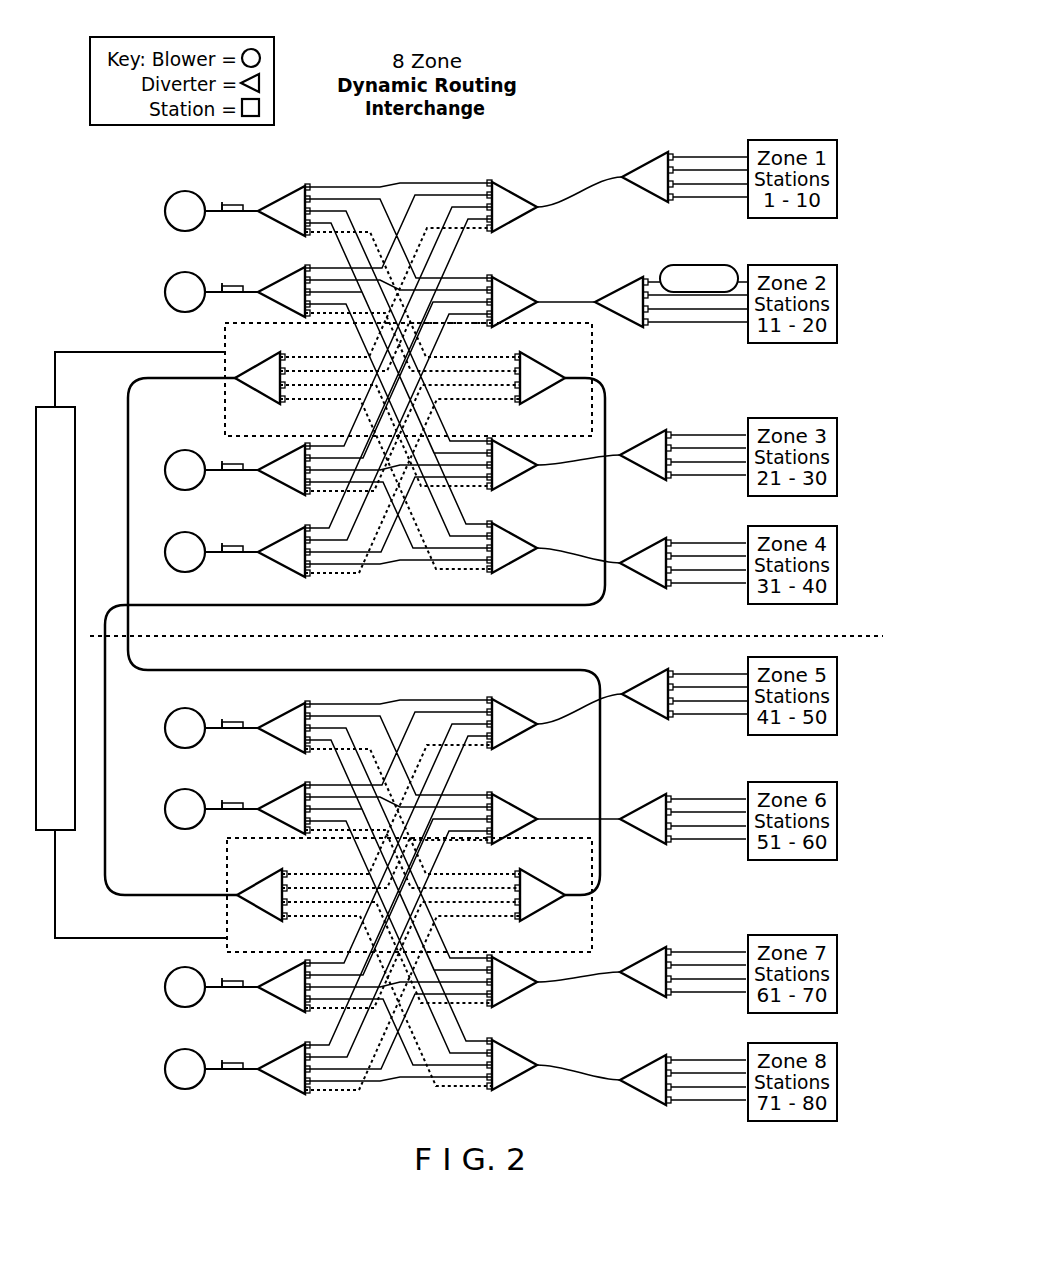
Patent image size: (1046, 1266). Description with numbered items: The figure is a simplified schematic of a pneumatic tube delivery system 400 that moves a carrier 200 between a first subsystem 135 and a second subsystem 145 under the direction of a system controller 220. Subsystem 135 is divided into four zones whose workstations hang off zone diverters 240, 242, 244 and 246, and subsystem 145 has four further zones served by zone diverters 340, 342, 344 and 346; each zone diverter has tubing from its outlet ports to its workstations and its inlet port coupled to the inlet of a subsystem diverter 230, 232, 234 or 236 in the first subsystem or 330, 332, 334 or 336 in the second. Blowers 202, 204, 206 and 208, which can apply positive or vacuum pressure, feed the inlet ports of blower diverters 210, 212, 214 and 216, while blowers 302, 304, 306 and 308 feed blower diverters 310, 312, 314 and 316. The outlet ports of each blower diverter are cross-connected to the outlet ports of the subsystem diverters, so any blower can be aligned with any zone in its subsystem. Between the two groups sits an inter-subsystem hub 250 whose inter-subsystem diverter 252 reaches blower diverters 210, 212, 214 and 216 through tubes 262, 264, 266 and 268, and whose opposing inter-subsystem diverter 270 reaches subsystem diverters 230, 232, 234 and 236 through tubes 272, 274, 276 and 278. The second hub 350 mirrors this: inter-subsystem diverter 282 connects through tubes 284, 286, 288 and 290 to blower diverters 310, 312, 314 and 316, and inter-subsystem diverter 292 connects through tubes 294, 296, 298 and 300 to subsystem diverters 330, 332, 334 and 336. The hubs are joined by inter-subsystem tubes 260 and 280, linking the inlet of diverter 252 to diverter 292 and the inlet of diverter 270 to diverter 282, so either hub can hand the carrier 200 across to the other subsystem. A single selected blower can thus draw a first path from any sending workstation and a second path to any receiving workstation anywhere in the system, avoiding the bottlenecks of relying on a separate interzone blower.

The pneumatic tube delivery system 400 is at (580, 66).
The subsystem 135 is at (853, 378).
The subsystem 145 is at (853, 895).
The carrier 200 is at (695, 264).
The blower 202 is at (170, 197).
The blower 204 is at (170, 280).
The blower 206 is at (187, 450).
The blower 208 is at (203, 563).
The blower diverter 210 is at (264, 202).
The blower diverter 212 is at (282, 279).
The blower diverter 214 is at (266, 466).
The blower diverter 216 is at (270, 546).
The system controller 220 is at (76, 428).
The subsystem diverter 230 is at (512, 194).
The subsystem diverter 232 is at (510, 287).
The subsystem diverter 234 is at (515, 453).
The subsystem diverter 236 is at (512, 534).
The zone diverter 240 is at (640, 167).
The zone diverter 242 is at (612, 293).
The zone diverter 244 is at (650, 439).
The zone diverter 246 is at (652, 546).
The inter-subsystem hub 250 is at (592, 364).
The inter-subsystem diverter 252 is at (548, 367).
The inter-subsystem tube 260 is at (520, 603).
The tube 262 is at (470, 356).
The tube 264 is at (505, 370).
The tube 266 is at (528, 400).
The tube 268 is at (485, 386).
The inter-subsystem diverter 270 is at (262, 363).
The tube 272 is at (357, 356).
The tube 274 is at (325, 370).
The tube 276 is at (318, 386).
The tube 278 is at (335, 400).
The inter-subsystem tube 280 is at (565, 670).
The inter-subsystem diverter 282 is at (548, 884).
The tube 284 is at (470, 873).
The tube 286 is at (505, 887).
The tube 288 is at (528, 917).
The tube 290 is at (485, 903).
The inter-subsystem diverter 292 is at (262, 880).
The tube 294 is at (357, 873).
The tube 296 is at (325, 887).
The tube 298 is at (318, 903).
The tube 300 is at (335, 917).
The blower 302 is at (170, 714).
The blower 304 is at (170, 797).
The blower 306 is at (170, 985).
The blower 308 is at (170, 1068).
The blower diverter 310 is at (264, 719).
The blower diverter 312 is at (282, 796).
The blower diverter 314 is at (266, 983).
The blower diverter 316 is at (270, 1062).
The subsystem diverter 330 is at (512, 710).
The subsystem diverter 332 is at (510, 804).
The subsystem diverter 334 is at (515, 970).
The subsystem diverter 336 is at (512, 1051).
The zone diverter 340 is at (640, 684).
The zone diverter 342 is at (642, 807).
The zone diverter 344 is at (650, 956).
The zone diverter 346 is at (652, 1063).
The inter-subsystem hub 350 is at (594, 906).